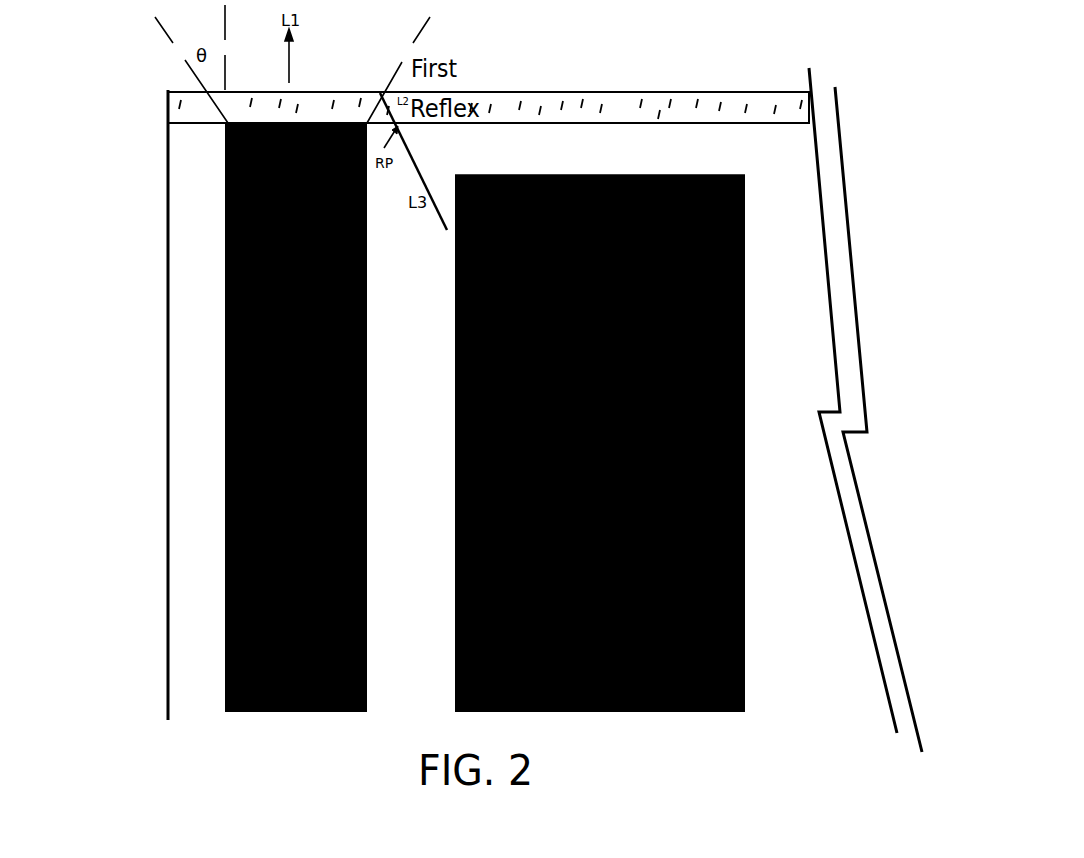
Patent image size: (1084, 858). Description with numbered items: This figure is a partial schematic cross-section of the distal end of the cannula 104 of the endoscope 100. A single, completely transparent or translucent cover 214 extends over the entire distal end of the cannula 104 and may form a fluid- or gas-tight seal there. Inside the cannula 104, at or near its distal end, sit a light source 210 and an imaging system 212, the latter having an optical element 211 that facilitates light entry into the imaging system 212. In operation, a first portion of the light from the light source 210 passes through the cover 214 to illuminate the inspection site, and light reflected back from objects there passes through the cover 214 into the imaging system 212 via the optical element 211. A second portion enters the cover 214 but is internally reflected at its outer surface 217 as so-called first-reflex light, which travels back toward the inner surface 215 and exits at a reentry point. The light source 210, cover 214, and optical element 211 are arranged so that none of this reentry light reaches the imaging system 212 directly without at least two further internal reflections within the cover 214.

The endoscope 100 is at (92, 138).
The cannula 104 is at (167, 552).
The light source 210 is at (360, 513).
The optical element 211 is at (653, 171).
The imaging system 212 is at (752, 627).
The cover 214 is at (615, 110).
The inner surface 215 is at (522, 123).
The outer surface 217 is at (657, 90).